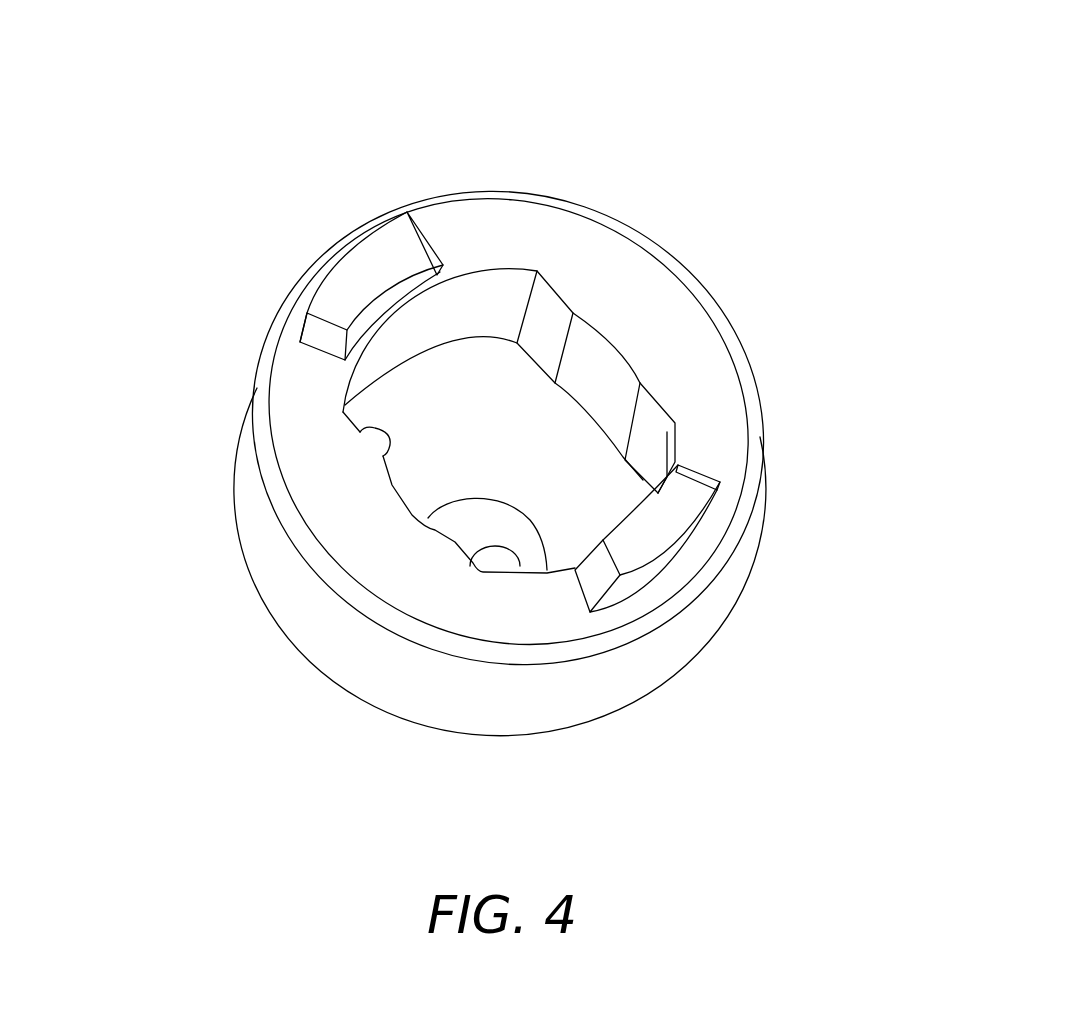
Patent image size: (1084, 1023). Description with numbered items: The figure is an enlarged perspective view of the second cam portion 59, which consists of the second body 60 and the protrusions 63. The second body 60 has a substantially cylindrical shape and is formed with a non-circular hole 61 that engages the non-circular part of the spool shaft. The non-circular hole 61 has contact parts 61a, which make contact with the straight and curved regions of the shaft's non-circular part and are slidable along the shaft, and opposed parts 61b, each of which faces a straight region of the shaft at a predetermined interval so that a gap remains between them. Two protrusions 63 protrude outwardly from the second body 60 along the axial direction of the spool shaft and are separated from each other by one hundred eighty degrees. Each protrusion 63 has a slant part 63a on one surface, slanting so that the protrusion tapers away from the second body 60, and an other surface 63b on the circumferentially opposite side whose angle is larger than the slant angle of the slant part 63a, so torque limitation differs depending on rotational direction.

The second cam portion 59 is at (504, 435).
The second body 60 is at (648, 285).
The non-circular hole 61 is at (478, 544).
The contact part 61a is at (486, 540).
The opposed part 61b is at (547, 572).
The protrusion 63 is at (504, 440).
The slant part 63a is at (430, 242).
The other surface 63b is at (318, 352).